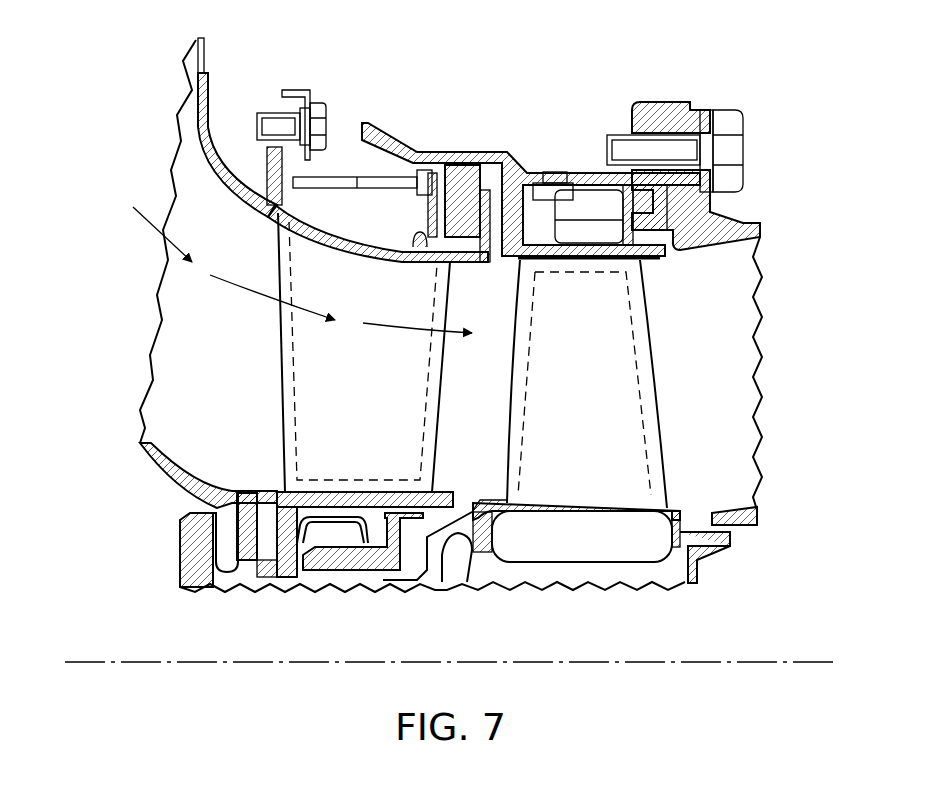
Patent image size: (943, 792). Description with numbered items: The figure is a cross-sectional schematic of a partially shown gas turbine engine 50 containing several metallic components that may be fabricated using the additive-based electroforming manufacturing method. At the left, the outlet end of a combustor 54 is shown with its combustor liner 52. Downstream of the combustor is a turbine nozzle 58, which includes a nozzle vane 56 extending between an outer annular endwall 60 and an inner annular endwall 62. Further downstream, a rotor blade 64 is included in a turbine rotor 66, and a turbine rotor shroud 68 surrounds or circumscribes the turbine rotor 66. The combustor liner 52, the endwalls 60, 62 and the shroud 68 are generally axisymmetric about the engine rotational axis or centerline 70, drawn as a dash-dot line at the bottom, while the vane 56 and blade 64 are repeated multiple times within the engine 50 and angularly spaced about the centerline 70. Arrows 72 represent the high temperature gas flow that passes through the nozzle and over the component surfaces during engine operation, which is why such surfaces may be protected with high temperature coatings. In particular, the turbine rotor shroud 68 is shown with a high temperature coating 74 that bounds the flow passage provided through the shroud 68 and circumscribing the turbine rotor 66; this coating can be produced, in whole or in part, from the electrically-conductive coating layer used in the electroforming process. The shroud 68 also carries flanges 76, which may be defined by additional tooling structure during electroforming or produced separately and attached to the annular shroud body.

The gas turbine engine 50 is at (160, 112).
The combustor liner 52 is at (155, 453).
The combustor 54 is at (163, 390).
The nozzle vane 56 is at (295, 392).
The turbine nozzle 58 is at (400, 376).
The outer annular endwall 60 is at (357, 252).
The inner annular endwall 62 is at (342, 492).
The rotor blade 64 is at (640, 373).
The turbine rotor 66 is at (666, 570).
The turbine rotor shroud 68 is at (609, 248).
The engine centerline 70 is at (108, 662).
The arrows 72 is at (162, 232).
The high temperature coating 74 is at (673, 258).
The flanges 76 is at (636, 194).